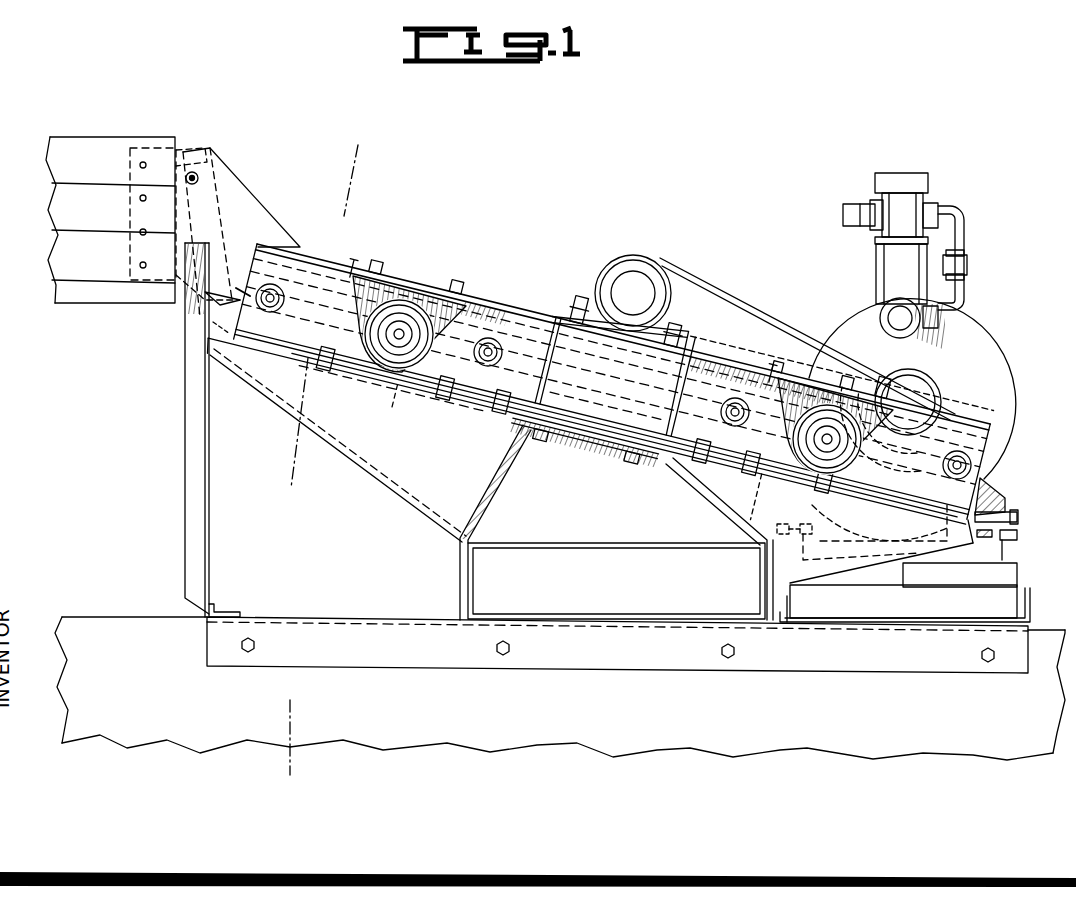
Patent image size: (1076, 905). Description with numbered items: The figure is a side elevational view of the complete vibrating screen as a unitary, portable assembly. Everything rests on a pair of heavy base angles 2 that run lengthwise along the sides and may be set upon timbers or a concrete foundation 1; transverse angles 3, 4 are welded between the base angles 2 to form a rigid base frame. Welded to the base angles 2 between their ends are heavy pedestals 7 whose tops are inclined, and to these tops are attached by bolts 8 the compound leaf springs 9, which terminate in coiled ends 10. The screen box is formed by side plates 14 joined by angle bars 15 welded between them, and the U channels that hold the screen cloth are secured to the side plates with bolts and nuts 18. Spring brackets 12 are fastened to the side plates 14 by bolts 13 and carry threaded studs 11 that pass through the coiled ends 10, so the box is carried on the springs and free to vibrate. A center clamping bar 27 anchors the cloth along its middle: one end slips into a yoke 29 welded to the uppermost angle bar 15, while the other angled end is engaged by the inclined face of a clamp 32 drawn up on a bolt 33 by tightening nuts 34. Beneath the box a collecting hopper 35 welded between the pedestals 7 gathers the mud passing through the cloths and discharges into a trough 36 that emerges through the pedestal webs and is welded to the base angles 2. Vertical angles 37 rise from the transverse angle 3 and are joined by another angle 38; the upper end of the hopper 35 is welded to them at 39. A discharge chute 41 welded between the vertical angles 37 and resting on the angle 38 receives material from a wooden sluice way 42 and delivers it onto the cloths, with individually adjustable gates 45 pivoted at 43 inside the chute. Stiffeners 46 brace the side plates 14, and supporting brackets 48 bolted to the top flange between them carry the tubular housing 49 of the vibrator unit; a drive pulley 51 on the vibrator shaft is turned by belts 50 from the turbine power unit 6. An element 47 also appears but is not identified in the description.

The foundation 1 is at (813, 707).
The base angles 2 is at (432, 668).
The transverse angle 3 is at (226, 612).
The transverse angle 4 is at (1030, 619).
The power unit 6 is at (992, 374).
The pedestals 7 is at (492, 490).
The bolts 8 is at (540, 446).
The compound leaf springs 9 is at (735, 468).
The coiled ends 10 is at (354, 298).
The threaded studs 11 is at (500, 316).
The spring brackets 12 is at (358, 262).
The bolts 13 is at (385, 270).
The side plates 14 is at (474, 295).
The angle bars 15 is at (262, 364).
The nuts 18 is at (284, 298).
The clamping bar 27 is at (1023, 478).
The yoke 29 is at (244, 288).
The clamp 32 is at (1003, 498).
The bolt 33 is at (1018, 526).
The tightening nuts 34 is at (1016, 518).
The collecting hopper 35 is at (417, 507).
The trough 36 is at (472, 580).
The vertical angles 37 is at (210, 488).
The angle 38 is at (205, 295).
The weld 39 is at (215, 330).
The discharge chute 41 is at (263, 224).
The wooden sluice way 42 is at (86, 304).
The pivot 43 is at (199, 178).
The adjustable gates 45 is at (205, 153).
The stiffeners 46 is at (566, 346).
The pan side 47 is at (694, 350).
The supporting brackets 48 is at (570, 300).
The housing 49 is at (700, 274).
The belts 50 is at (742, 305).
The drive pulley 51 is at (646, 263).